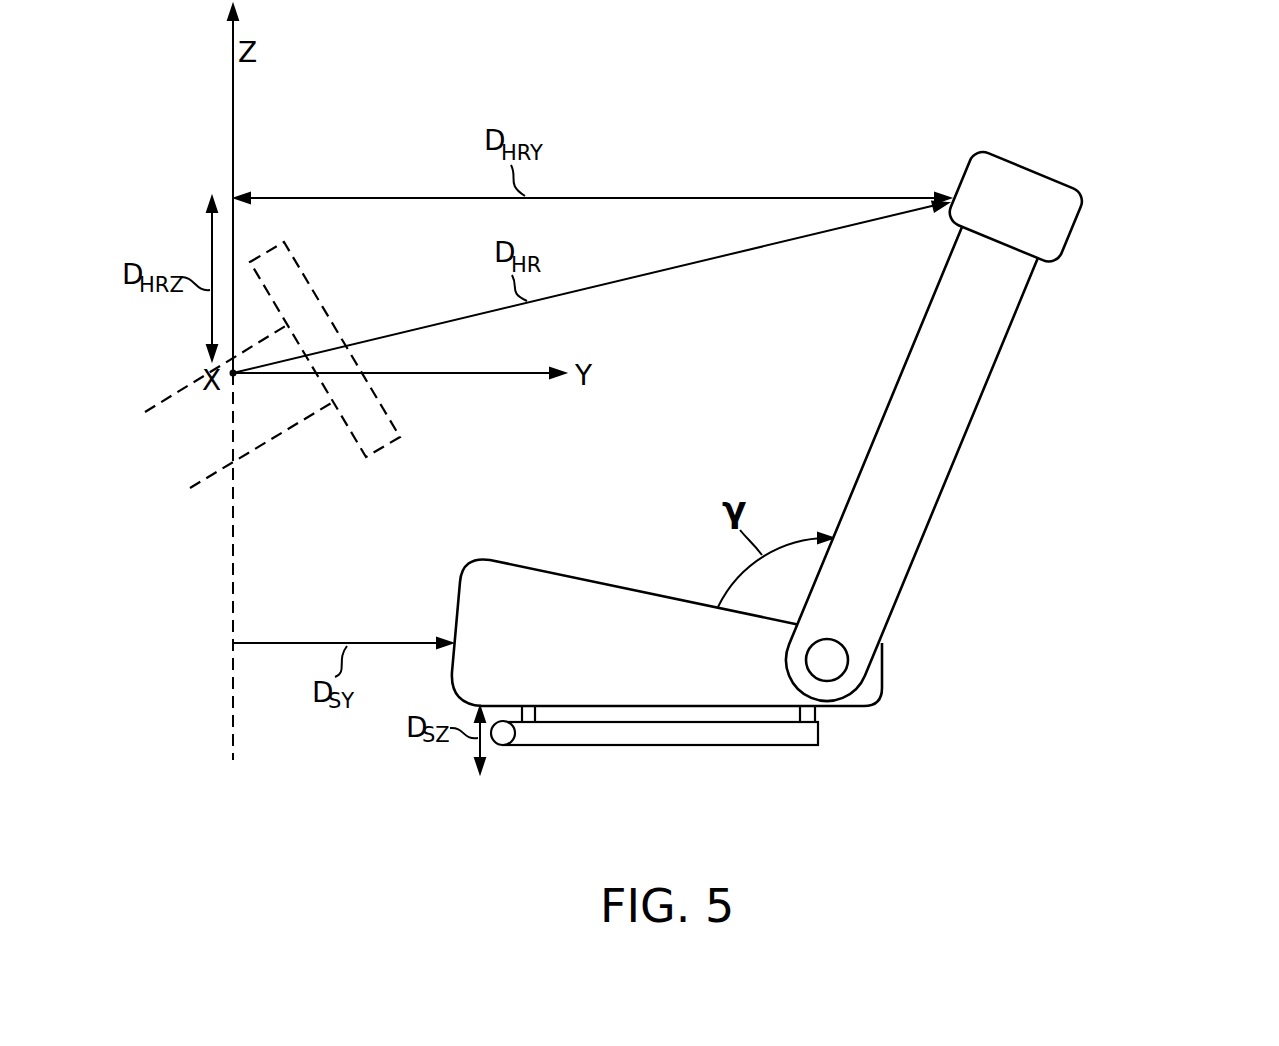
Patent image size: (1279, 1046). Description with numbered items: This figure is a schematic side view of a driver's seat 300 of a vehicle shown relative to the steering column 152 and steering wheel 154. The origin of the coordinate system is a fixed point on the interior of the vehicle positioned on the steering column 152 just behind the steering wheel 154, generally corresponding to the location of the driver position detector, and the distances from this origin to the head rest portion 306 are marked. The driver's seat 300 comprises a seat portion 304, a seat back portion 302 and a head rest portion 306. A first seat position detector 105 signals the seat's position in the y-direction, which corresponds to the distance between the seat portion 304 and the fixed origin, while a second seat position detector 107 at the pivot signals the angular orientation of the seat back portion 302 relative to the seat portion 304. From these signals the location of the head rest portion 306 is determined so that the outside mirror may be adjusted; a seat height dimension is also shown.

The driver's seat 300 is at (1130, 326).
The seat back portion 302 is at (957, 452).
The seat portion 304 is at (540, 568).
The head rest portion 306 is at (962, 180).
The second seat position detector 107 is at (851, 668).
The first seat position detector 105 is at (506, 746).
The steering column 152 is at (262, 443).
The steering wheel 154 is at (310, 283).